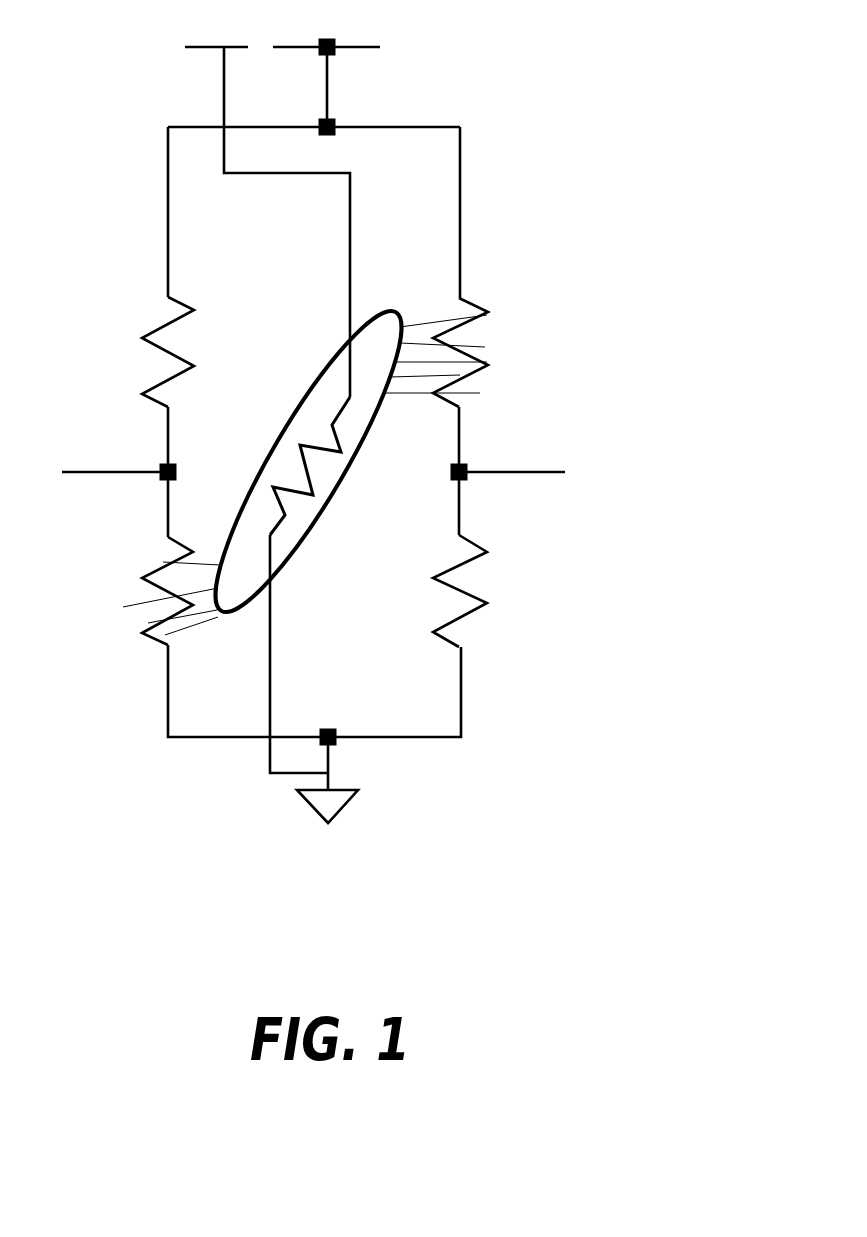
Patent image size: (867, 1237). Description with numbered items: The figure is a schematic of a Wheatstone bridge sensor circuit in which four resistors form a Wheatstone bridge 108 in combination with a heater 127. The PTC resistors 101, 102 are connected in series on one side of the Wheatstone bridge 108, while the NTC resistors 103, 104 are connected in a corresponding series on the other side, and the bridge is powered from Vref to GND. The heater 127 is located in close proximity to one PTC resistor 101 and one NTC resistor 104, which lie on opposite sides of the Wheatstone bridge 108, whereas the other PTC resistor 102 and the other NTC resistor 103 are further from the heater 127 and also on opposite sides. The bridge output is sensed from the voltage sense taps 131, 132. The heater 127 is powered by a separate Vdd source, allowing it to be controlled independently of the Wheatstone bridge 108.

The Wheatstone bridge 108 is at (688, 178).
The PTC resistor 101 is at (473, 302).
The PTC resistor 102 is at (465, 562).
The NTC resistor 103 is at (157, 328).
The NTC resistor 104 is at (152, 572).
The heater 127 is at (272, 455).
The voltage sense tap 131 is at (542, 470).
The voltage sense tap 132 is at (63, 470).